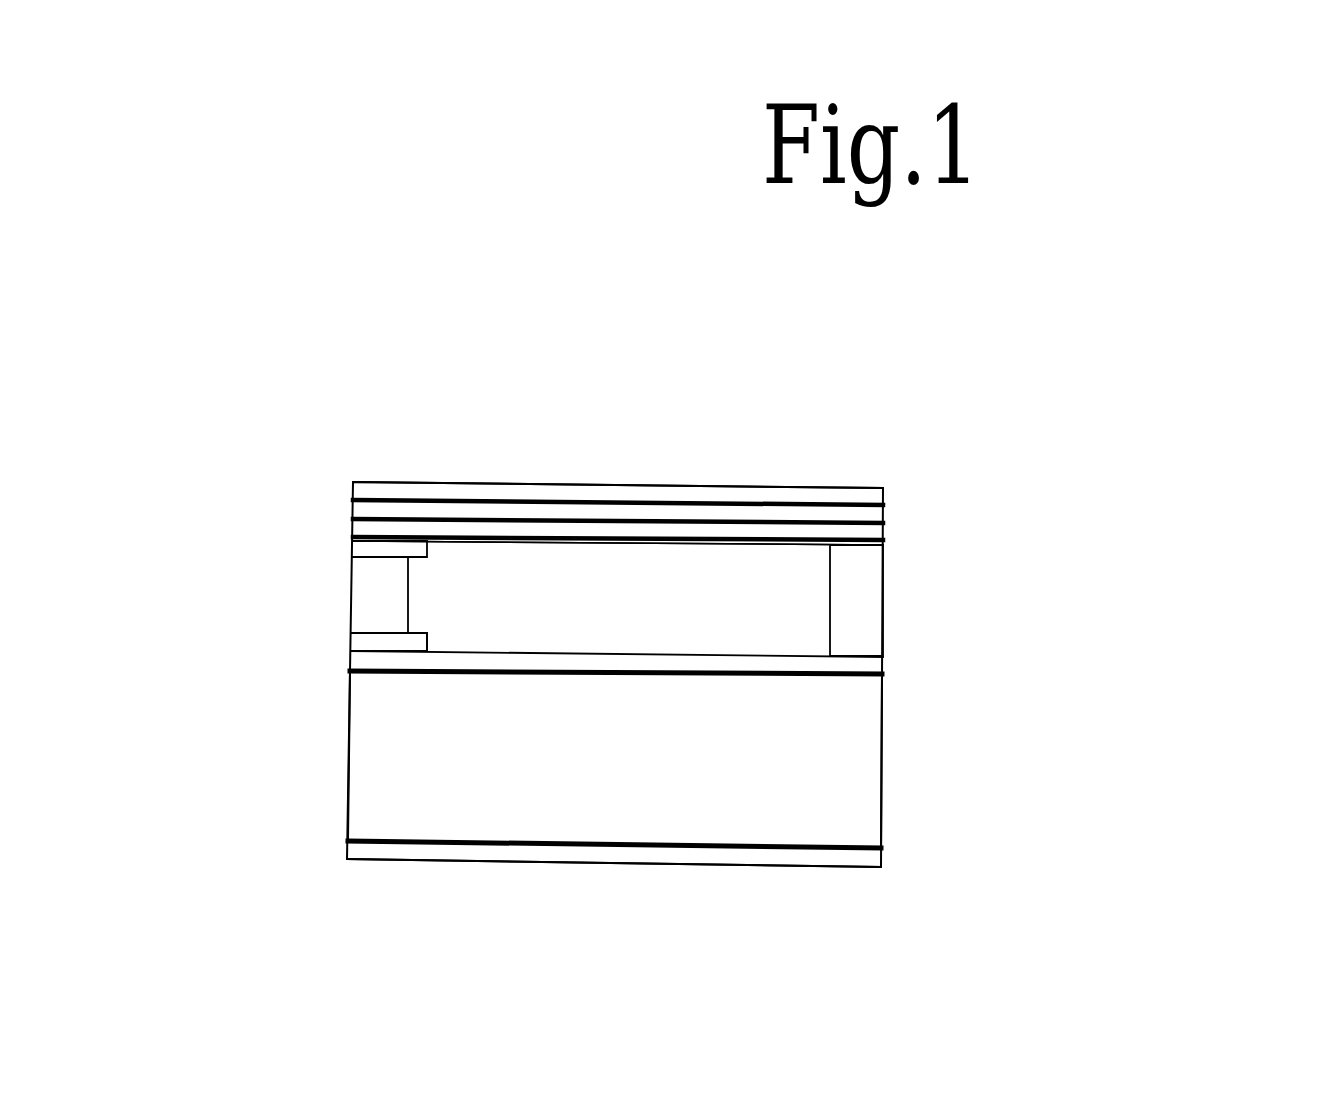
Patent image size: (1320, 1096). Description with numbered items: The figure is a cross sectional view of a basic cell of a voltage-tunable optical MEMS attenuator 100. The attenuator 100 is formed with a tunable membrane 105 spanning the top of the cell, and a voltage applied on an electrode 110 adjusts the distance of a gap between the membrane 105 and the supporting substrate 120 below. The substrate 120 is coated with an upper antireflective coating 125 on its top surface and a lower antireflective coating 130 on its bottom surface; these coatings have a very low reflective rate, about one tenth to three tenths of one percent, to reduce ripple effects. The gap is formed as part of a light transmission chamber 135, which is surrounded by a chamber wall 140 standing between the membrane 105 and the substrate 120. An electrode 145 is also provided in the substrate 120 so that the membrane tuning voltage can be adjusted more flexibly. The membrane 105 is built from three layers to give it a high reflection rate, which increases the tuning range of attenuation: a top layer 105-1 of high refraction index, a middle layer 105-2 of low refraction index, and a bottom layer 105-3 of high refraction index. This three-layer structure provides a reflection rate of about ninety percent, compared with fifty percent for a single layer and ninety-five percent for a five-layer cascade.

The optical MEMS attenuator 100 is at (675, 390).
The tunable membrane 105 is at (1108, 484).
The layer of high refraction index 105-1 is at (883, 492).
The middle layer of low refraction index 105-2 is at (883, 513).
The bottom layer of high refraction index 105-3 is at (883, 533).
The electrode 110 is at (365, 547).
The supporting substrate 120 is at (883, 765).
The upper antireflective coating 125 is at (880, 667).
The lower antireflective coating 130 is at (880, 858).
The light transmission chamber 135 is at (615, 614).
The chamber wall 140 is at (847, 602).
The electrode 145 is at (362, 642).